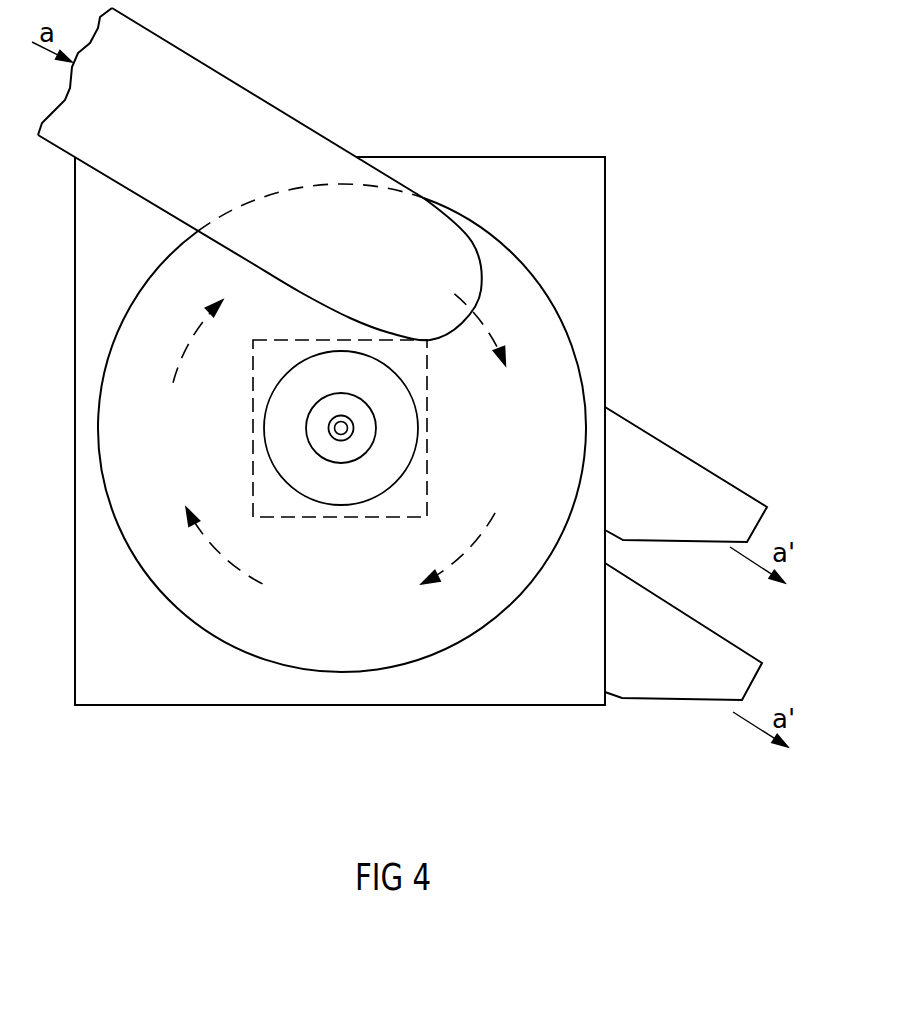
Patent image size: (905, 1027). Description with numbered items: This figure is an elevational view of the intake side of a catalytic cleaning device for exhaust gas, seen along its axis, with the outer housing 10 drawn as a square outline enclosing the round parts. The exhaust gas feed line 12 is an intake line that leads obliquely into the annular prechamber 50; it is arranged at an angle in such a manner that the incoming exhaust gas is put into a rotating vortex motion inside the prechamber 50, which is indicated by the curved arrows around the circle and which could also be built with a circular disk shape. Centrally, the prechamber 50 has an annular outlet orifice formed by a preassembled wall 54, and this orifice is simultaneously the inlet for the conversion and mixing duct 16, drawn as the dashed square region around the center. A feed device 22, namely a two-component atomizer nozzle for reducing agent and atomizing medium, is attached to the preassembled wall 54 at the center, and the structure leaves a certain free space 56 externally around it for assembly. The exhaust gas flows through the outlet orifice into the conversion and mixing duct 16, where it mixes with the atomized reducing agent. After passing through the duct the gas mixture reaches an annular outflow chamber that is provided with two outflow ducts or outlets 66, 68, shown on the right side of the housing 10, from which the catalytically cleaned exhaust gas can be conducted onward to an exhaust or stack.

The housing 10 is at (606, 185).
The exhaust gas feed line 12 is at (235, 82).
The conversion and mixing duct 16 is at (427, 400).
The feed device 22 is at (329, 427).
The annular prechamber 50 is at (558, 314).
The preassembled wall 54 is at (360, 445).
The free space 56 is at (403, 427).
The outflow duct 66 is at (695, 482).
The outflow duct 68 is at (673, 627).